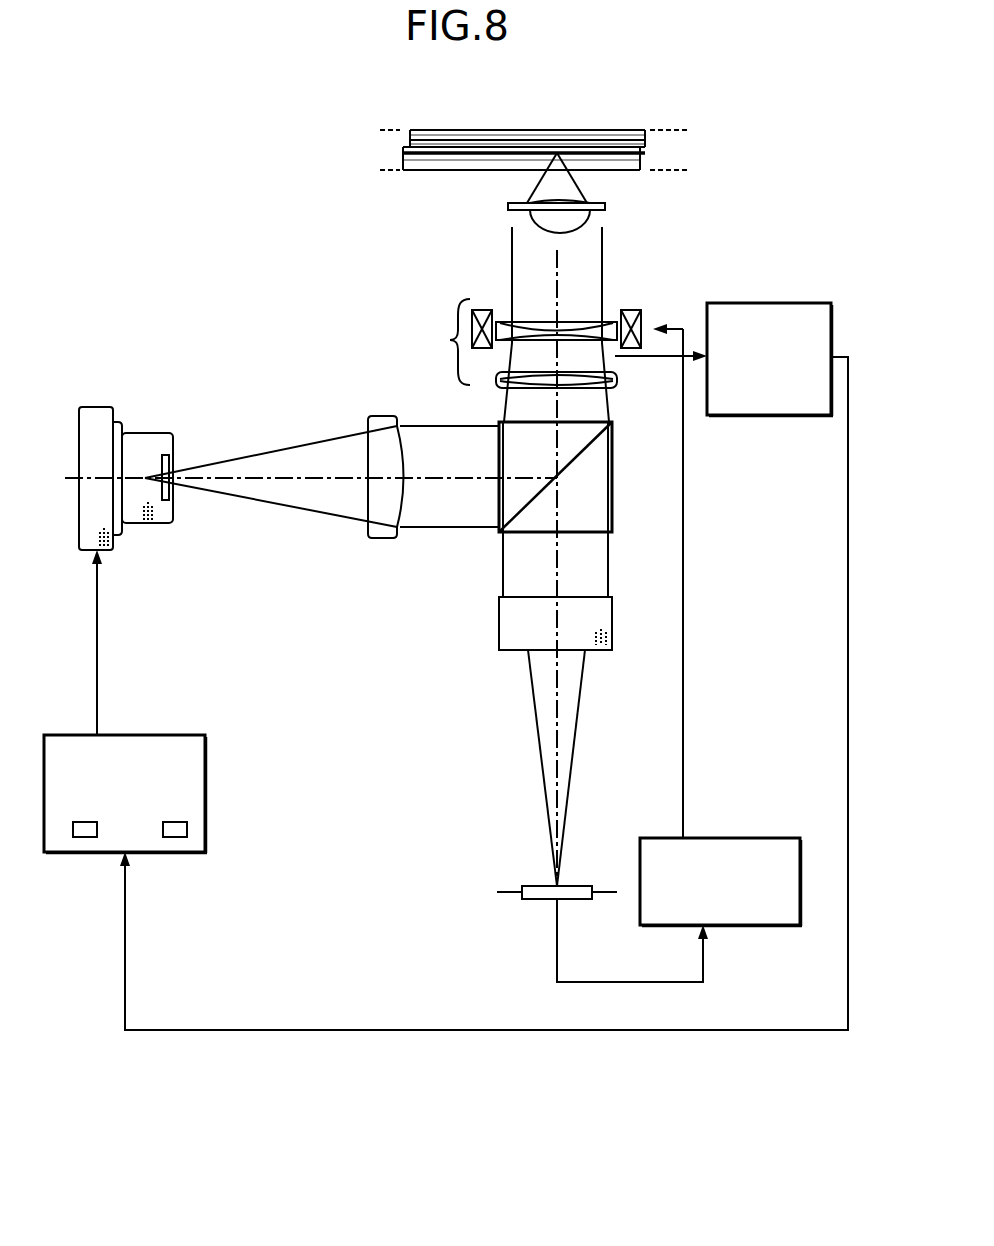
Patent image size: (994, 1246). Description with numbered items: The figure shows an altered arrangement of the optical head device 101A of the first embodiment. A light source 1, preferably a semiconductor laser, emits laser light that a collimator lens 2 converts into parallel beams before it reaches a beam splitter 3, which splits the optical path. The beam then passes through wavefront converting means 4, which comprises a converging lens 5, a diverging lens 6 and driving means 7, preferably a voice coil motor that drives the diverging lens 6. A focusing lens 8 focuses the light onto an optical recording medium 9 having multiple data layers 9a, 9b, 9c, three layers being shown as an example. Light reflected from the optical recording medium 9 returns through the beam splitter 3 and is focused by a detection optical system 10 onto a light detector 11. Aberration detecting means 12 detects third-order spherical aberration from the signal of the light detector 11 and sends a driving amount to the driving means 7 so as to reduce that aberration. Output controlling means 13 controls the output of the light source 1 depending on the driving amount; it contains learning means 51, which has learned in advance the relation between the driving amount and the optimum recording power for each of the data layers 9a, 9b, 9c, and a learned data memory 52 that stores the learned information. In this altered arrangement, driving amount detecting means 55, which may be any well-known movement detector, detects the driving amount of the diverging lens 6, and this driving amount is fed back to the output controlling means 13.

The light source 1 is at (137, 445).
The collimator lens 2 is at (378, 416).
The beam splitter 3 is at (540, 518).
The wavefront converting means 4 is at (456, 328).
The converging lens 5 is at (597, 383).
The diverging lens 6 is at (585, 328).
The driving means 7 is at (636, 310).
The focusing lens 8 is at (535, 213).
The optical recording medium 9 is at (418, 163).
The data layer 9a is at (643, 155).
The data layer 9b is at (645, 147).
The data layer 9c is at (645, 136).
The detection optical system 10 is at (513, 632).
The light detector 11 is at (525, 887).
The aberration detecting means 12 is at (668, 913).
The output controlling means 13 is at (174, 735).
The learning means 51 is at (177, 837).
The learned data memory 52 is at (83, 837).
The driving amount detecting means 55 is at (801, 303).
The optical head device 101A is at (661, 1102).